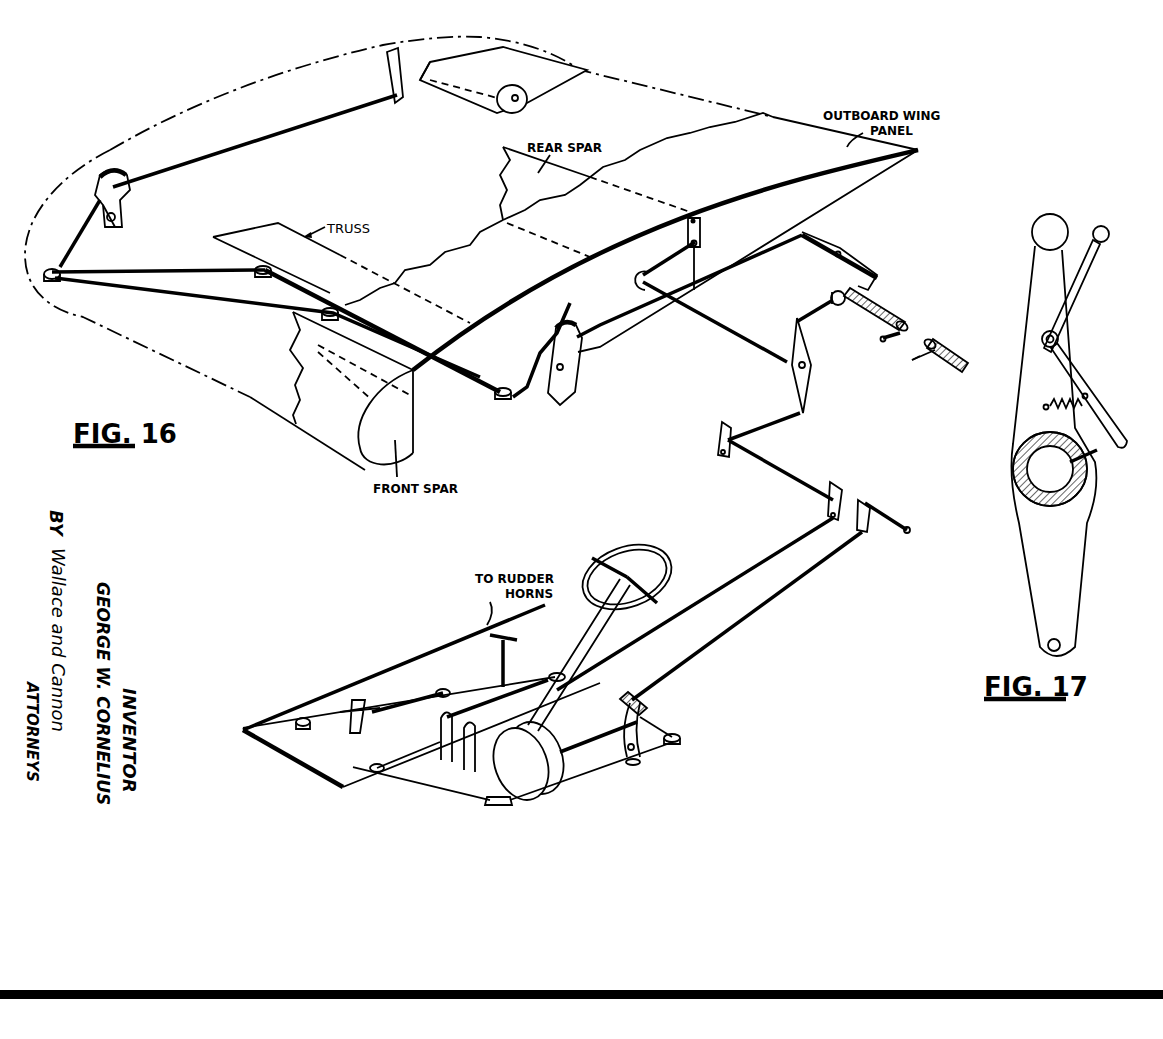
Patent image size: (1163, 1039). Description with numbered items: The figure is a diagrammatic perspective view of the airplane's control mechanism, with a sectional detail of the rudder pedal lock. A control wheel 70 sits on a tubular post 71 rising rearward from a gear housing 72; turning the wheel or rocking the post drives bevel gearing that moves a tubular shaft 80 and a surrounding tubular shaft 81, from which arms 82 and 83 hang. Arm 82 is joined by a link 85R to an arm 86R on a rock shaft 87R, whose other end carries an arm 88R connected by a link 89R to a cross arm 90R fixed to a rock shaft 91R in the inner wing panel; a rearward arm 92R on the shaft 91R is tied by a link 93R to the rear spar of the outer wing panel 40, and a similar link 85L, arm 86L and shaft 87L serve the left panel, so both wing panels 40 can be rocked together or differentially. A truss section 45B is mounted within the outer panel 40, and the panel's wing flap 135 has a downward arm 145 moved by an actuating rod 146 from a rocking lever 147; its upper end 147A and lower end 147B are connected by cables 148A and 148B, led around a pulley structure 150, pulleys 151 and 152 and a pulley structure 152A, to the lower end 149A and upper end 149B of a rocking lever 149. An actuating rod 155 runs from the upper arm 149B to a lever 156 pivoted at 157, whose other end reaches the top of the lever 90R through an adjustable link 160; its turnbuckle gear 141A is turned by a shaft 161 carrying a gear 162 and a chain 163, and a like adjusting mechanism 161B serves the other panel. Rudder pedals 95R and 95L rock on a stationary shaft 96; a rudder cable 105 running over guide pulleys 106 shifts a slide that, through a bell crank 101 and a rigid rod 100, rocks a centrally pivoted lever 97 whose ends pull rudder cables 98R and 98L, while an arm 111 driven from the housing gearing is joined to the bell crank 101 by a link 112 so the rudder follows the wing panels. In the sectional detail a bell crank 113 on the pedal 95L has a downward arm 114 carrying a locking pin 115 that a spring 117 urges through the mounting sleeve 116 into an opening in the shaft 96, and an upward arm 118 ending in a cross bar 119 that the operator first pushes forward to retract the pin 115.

In FIG. 16, the outer wing panel 40 is at (320, 443).
In FIG. 16, the truss section 45B is at (423, 298).
In FIG. 16, the control wheel 70 is at (610, 550).
In FIG. 16, the tubular post 71 is at (603, 613).
In FIG. 16, the gear housing 72 is at (550, 770).
In FIG. 16, the tubular shaft 80 is at (457, 705).
In FIG. 16, the tubular shaft 81 is at (490, 740).
In FIG. 16, the arm 82 is at (440, 767).
In FIG. 16, the arm 83 is at (467, 758).
In FIG. 16, the link 85R is at (773, 553).
In FIG. 16, the link 85L is at (803, 571).
In FIG. 16, the arm 86R is at (828, 497).
In FIG. 16, the arm 86L is at (870, 527).
In FIG. 16, the rock shaft 87R is at (797, 470).
In FIG. 16, the shaft 87L is at (877, 507).
In FIG. 16, the arm 88R is at (718, 443).
In FIG. 16, the link 89R is at (768, 427).
In FIG. 16, the cross arm 90R is at (793, 378).
In FIG. 16, the rock shaft 91R is at (708, 311).
In FIG. 16, the arm 92R is at (657, 268).
In FIG. 16, the link 93R is at (703, 227).
In FIG. 16, the right-hand rudder pedal 95R is at (510, 672).
In FIG. 16, the left-hand rudder pedal 95L is at (653, 757).
In FIG. 17, the left-hand rudder pedal 95L is at (1037, 552).
In FIG. 16, the stationary shaft 96 is at (608, 732).
In FIG. 17, the stationary shaft 96 is at (1025, 471).
In FIG. 16, the centrally pivoted lever 97 is at (273, 750).
In FIG. 16, the rudder cable 98R is at (417, 650).
In FIG. 16, the rudder cable 98L is at (423, 720).
In FIG. 16, the rigid rod 100 is at (317, 712).
In FIG. 16, the bell crank 101 is at (357, 703).
In FIG. 16, the rudder cable 105 is at (417, 693).
In FIG. 16, the guide pulleys 106 is at (680, 733).
In FIG. 16, the arm 111 is at (530, 800).
In FIG. 16, the link 112 is at (462, 793).
In FIG. 17, the bell crank 113 is at (1062, 339).
In FIG. 17, the arm 114 is at (1095, 411).
In FIG. 17, the locking pin 115 is at (1097, 461).
In FIG. 17, the mounting sleeve 116 is at (1087, 490).
In FIG. 17, the spring 117 is at (1046, 401).
In FIG. 17, the arm 118 is at (1079, 287).
In FIG. 17, the cross bar 119 is at (1108, 211).
In FIG. 16, the wing flap 135 is at (530, 63).
In FIG. 16, the turn buckle mechanism 141A is at (858, 313).
In FIG. 16, the arm 145 is at (393, 83).
In FIG. 16, the actuating rod 146 is at (277, 133).
In FIG. 16, the rocking lever 147 is at (123, 193).
In FIG. 16, the upper end 147A is at (100, 182).
In FIG. 16, the lower end 147B is at (120, 227).
In FIG. 16, the cable 148A is at (73, 233).
In FIG. 16, the cable 148B is at (140, 267).
In FIG. 16, the rocking lever 149 is at (588, 374).
In FIG. 16, the lower end 149A is at (577, 386).
In FIG. 16, the upper end 149B is at (582, 348).
In FIG. 16, the pulley structure 150 is at (62, 267).
In FIG. 16, the pulley 151 is at (330, 308).
In FIG. 16, the pulley 152 is at (268, 269).
In FIG. 16, the pulley structure 152A is at (503, 383).
In FIG. 16, the actuating rod 155 is at (788, 245).
In FIG. 16, the horizontally pivoted lever 156 is at (850, 260).
In FIG. 16, the pivot 157 is at (839, 251).
In FIG. 16, the adjustable link 160 is at (817, 316).
In FIG. 16, the shaft 161 is at (887, 343).
In FIG. 16, the adjusting mechanism 161B is at (923, 363).
In FIG. 16, the gear 162 is at (907, 330).
In FIG. 16, the chain 163 is at (875, 305).